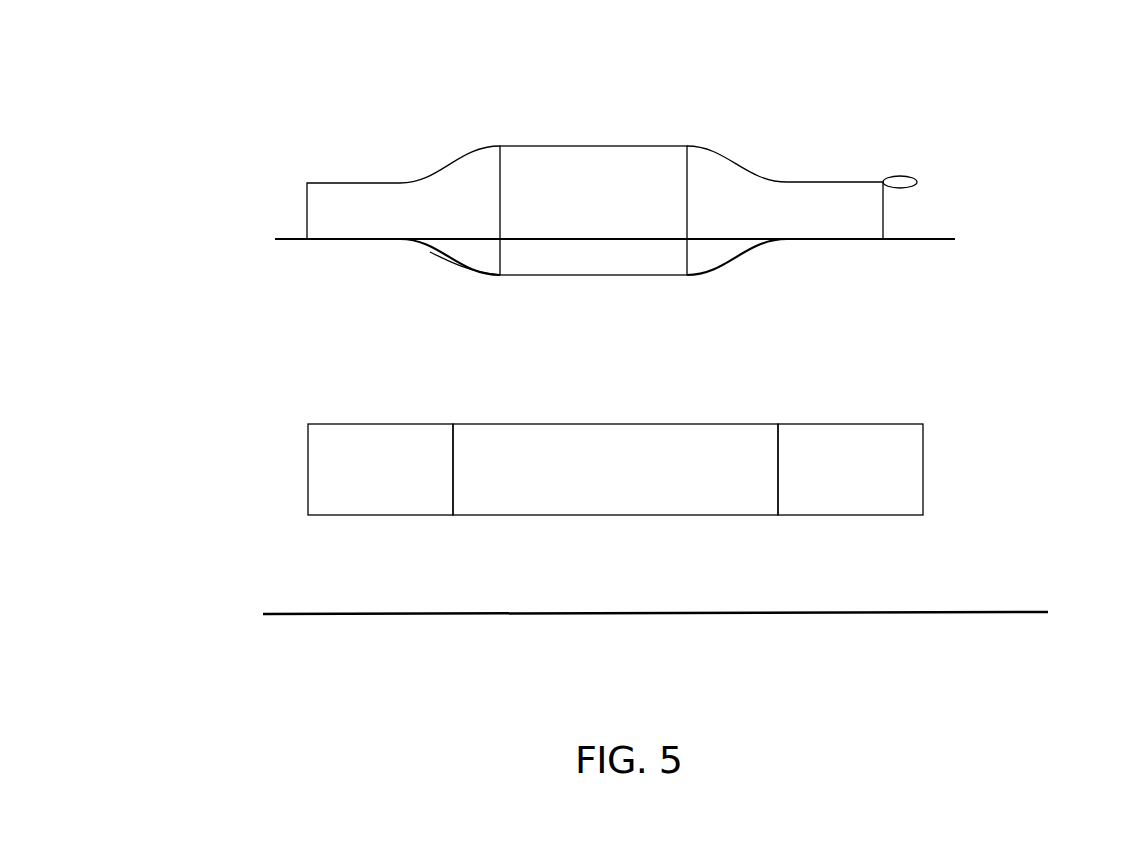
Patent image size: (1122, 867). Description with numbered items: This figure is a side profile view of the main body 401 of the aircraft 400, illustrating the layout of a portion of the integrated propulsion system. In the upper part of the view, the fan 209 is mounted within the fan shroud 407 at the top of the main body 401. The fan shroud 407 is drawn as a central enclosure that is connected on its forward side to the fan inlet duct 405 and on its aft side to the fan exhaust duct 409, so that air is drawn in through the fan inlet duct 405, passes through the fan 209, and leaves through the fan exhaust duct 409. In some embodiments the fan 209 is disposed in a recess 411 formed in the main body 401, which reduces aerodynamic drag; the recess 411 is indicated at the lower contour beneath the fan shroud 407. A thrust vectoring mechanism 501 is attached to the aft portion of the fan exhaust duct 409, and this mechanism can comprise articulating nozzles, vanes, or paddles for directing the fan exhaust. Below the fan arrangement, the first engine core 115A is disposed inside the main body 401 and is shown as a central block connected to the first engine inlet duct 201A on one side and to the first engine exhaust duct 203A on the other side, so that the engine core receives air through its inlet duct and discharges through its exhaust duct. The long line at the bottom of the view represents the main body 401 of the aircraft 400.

The aircraft 400 is at (214, 105).
The fan inlet duct 405 is at (398, 183).
The fan shroud 407 is at (591, 146).
The fan exhaust duct 409 is at (822, 182).
The recess 411 is at (474, 268).
The fan 209 is at (607, 217).
The thrust vectoring mechanism 501 is at (897, 177).
The first engine inlet duct 201A is at (407, 478).
The first engine core 115A is at (640, 478).
The first engine exhaust duct 203A is at (877, 478).
The main body 401 is at (1003, 614).